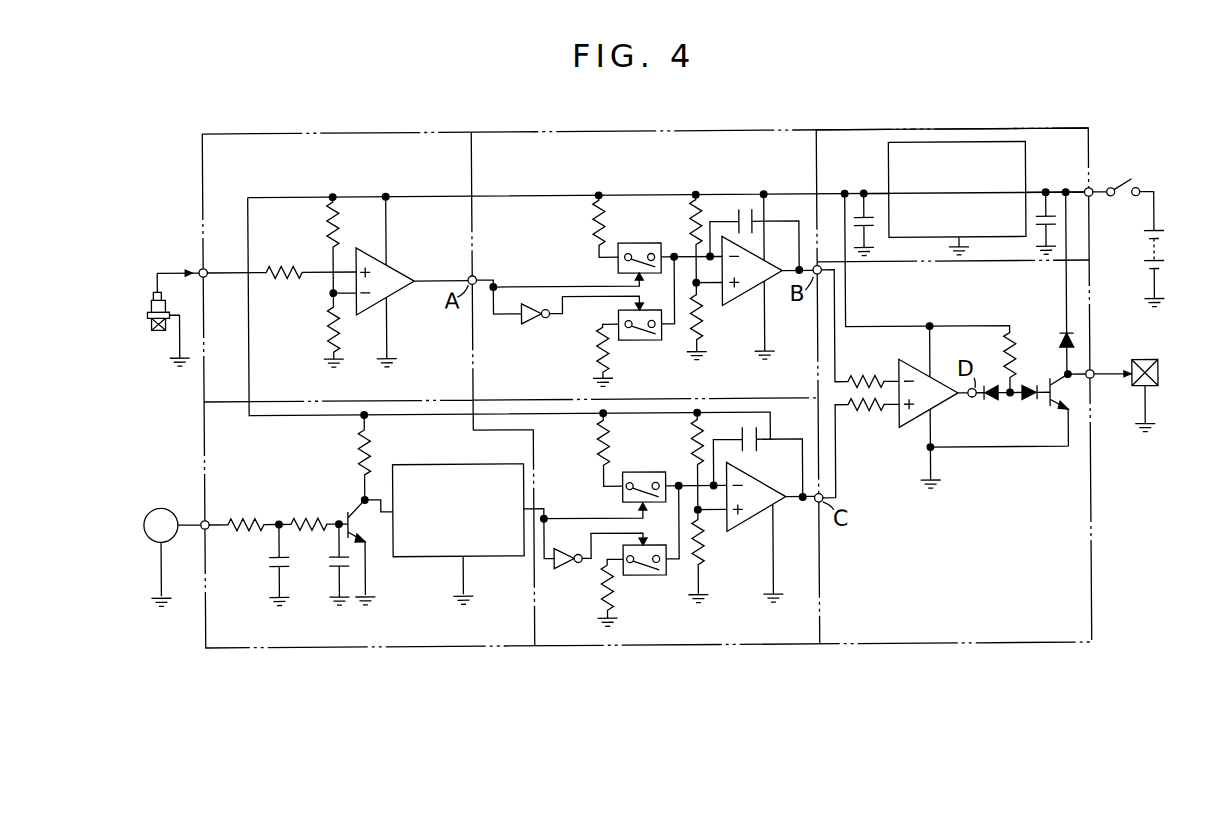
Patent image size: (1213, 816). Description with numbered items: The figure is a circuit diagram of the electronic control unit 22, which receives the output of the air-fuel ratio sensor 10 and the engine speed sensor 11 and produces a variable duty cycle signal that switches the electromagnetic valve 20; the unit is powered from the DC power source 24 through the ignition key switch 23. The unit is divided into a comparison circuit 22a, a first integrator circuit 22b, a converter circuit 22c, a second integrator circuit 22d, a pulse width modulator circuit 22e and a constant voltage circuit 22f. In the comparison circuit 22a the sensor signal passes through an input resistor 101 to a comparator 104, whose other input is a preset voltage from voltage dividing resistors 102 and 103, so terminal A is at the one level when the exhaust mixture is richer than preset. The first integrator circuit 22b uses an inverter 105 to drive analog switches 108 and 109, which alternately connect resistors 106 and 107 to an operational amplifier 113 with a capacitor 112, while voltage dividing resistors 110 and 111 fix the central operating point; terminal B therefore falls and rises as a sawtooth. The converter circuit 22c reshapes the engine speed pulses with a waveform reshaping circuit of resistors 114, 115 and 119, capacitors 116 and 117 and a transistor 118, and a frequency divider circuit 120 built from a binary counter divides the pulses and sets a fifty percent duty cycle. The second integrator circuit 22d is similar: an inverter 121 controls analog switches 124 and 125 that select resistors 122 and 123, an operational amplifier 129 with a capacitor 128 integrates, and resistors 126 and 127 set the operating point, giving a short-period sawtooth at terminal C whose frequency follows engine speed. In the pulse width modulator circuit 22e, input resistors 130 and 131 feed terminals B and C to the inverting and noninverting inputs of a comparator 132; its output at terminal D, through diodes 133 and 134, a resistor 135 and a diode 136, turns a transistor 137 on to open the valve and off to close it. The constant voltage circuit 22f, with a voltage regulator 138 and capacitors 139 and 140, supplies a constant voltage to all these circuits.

The air-fuel ratio sensor 10 is at (152, 299).
The engine speed sensor 11 is at (164, 506).
The electromagnetic valve 20 is at (1147, 362).
The electronic control unit 22 is at (1093, 572).
The comparison circuit 22a is at (305, 131).
The first integrator circuit 22b is at (555, 131).
The converter circuit 22c is at (322, 648).
The second integrator circuit 22d is at (640, 645).
The pulse width modulator circuit 22e is at (1037, 645).
The constant voltage circuit 22f is at (1020, 131).
The ignition key switch 23 is at (1125, 181).
The DC power source 24 is at (1145, 253).
The input resistor 101 is at (280, 277).
The voltage dividing resistor 102 is at (328, 234).
The voltage dividing resistor 103 is at (328, 326).
The comparator 104 is at (396, 268).
The inverter 105 is at (532, 324).
The resistor 106 is at (594, 235).
The resistor 107 is at (596, 348).
The analog switch 108 is at (634, 243).
The analog switch 109 is at (645, 340).
The voltage dividing resistor 110 is at (694, 217).
The voltage dividing resistor 111 is at (704, 338).
The capacitor 112 is at (746, 208).
The operational amplifier 113 is at (751, 298).
The resistor 114 is at (243, 518).
The resistor 115 is at (302, 518).
The capacitor 116 is at (268, 565).
The capacitor 117 is at (328, 563).
The transistor 118 is at (366, 543).
The resistor 119 is at (358, 443).
The frequency divider circuit 120 is at (463, 463).
The inverter 121 is at (572, 566).
The resistor 122 is at (597, 434).
The resistor 123 is at (600, 600).
The analog switch 124 is at (654, 471).
The analog switch 125 is at (630, 575).
The resistor 126 is at (691, 436).
The resistor 127 is at (705, 560).
The capacitor 128 is at (752, 432).
The operational amplifier 129 is at (746, 520).
The input resistor 130 is at (868, 362).
The input resistor 131 is at (862, 410).
The comparator 132 is at (912, 426).
The diode 133 is at (987, 404).
The diode 134 is at (1030, 403).
The resistor 135 is at (1005, 356).
The diode 136 is at (1063, 340).
The transistor 137 is at (1058, 384).
The voltage regulator 138 is at (889, 160).
The capacitor 139 is at (853, 214).
The capacitor 140 is at (1055, 212).